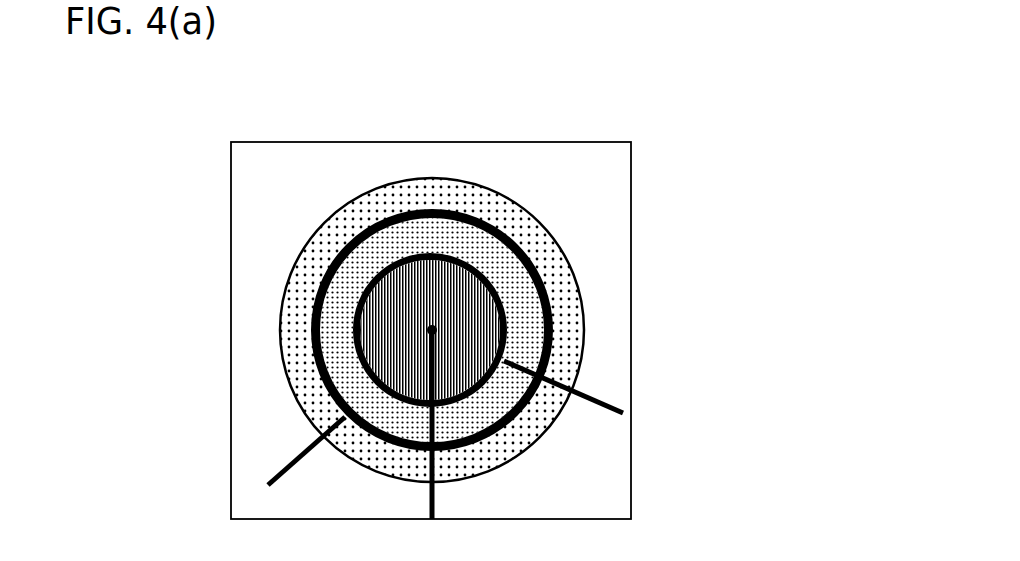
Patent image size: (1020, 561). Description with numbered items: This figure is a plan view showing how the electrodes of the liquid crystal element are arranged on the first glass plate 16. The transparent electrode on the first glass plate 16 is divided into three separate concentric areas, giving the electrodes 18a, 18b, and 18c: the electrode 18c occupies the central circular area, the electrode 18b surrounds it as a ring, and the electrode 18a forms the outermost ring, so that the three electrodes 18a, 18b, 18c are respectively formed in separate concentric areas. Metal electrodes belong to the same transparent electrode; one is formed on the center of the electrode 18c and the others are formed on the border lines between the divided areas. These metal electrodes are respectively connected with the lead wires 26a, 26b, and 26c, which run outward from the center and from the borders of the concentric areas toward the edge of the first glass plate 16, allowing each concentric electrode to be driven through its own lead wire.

The first glass plate 16 is at (298, 173).
The electrode 18a is at (460, 200).
The electrode 18b is at (510, 277).
The electrode 18c is at (475, 328).
The lead wire 26a is at (433, 495).
The lead wire 26b is at (590, 393).
The lead wire 26c is at (310, 448).